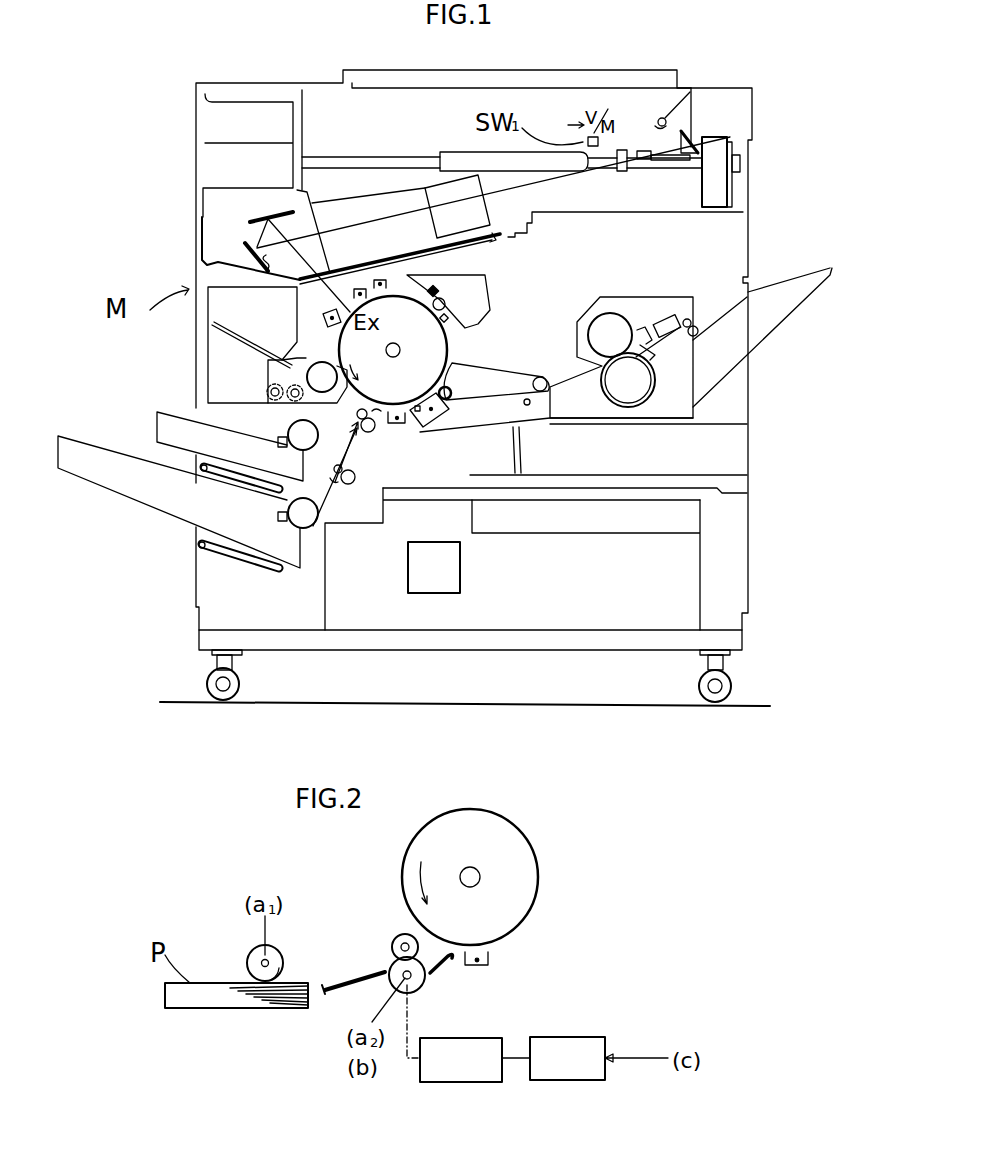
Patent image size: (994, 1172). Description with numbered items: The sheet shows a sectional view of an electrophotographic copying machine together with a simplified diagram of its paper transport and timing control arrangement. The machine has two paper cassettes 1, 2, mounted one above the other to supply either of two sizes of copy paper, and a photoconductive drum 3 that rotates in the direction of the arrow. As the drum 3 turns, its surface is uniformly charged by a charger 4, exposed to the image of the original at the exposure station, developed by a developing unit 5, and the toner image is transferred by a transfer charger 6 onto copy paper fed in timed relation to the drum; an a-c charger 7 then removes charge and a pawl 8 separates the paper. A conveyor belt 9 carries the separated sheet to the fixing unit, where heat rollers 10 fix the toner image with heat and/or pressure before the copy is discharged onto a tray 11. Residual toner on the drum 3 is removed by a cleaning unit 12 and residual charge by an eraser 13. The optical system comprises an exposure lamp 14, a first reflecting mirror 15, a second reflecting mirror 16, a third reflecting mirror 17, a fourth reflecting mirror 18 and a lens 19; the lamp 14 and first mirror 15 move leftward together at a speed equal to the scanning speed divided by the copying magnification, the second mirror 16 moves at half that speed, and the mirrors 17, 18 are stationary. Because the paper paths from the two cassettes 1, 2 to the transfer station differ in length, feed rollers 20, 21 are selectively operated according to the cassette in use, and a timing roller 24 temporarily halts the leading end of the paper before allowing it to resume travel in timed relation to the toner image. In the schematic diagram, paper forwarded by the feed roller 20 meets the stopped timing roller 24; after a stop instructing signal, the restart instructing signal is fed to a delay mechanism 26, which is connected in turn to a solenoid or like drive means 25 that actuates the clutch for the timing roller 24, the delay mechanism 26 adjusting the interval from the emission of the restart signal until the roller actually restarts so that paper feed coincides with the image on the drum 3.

In FIG. 1, the paper cassette 1 is at (165, 450).
In FIG. 1, the paper cassette 2 is at (146, 505).
In FIG. 1, the photoconductive drum 3 is at (449, 347).
In FIG. 2, the photoconductive drum 3 is at (515, 836).
In FIG. 1, the charger 4 is at (358, 290).
In FIG. 1, the developing unit 5 is at (277, 327).
In FIG. 1, the transfer charger 6 is at (398, 423).
In FIG. 2, the transfer charger 6 is at (485, 967).
In FIG. 1, the a-c charger 7 is at (437, 411).
In FIG. 1, the pawl 8 is at (452, 391).
In FIG. 1, the conveyor belt 9 is at (498, 365).
In FIG. 1, the heat rollers 10 is at (606, 330).
In FIG. 1, the tray 11 is at (751, 341).
In FIG. 1, the cleaning unit 12 is at (485, 282).
In FIG. 1, the eraser 13 is at (378, 281).
In FIG. 1, the exposure lamp 14 is at (660, 117).
In FIG. 1, the first reflecting mirror 15 is at (680, 140).
In FIG. 1, the second reflecting mirror 16 is at (732, 188).
In FIG. 1, the third reflecting mirror 17 is at (275, 261).
In FIG. 1, the fourth reflecting mirror 18 is at (257, 217).
In FIG. 1, the lens 19 is at (487, 190).
In FIG. 1, the feed roller 20 is at (298, 423).
In FIG. 2, the feed roller 20 is at (252, 958).
In FIG. 1, the feed roller 21 is at (312, 521).
In FIG. 1, the timing roller 24 is at (364, 433).
In FIG. 2, the timing roller 24 is at (424, 977).
In FIG. 2, the drive means 25 is at (463, 1083).
In FIG. 2, the delay circuit 26 is at (563, 1081).